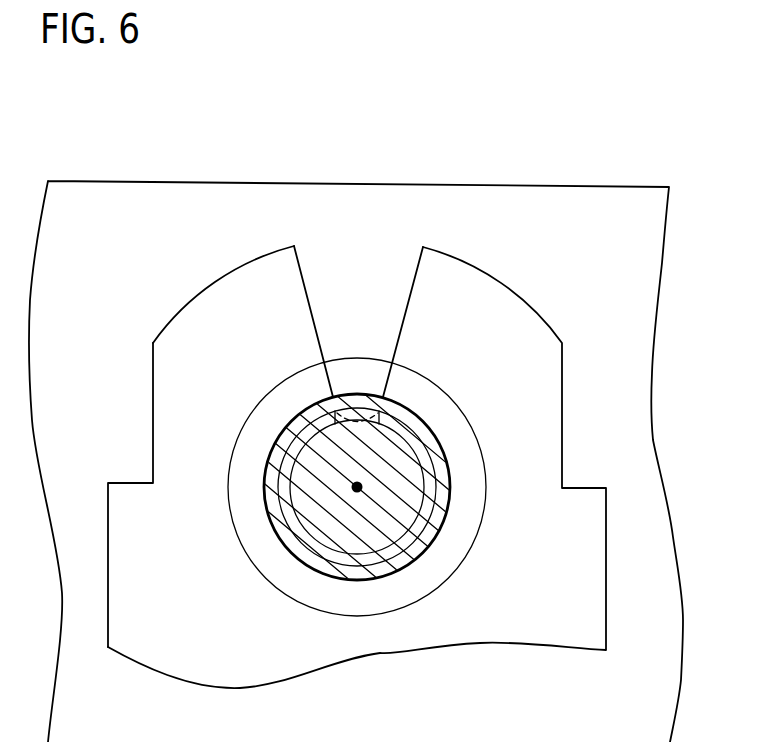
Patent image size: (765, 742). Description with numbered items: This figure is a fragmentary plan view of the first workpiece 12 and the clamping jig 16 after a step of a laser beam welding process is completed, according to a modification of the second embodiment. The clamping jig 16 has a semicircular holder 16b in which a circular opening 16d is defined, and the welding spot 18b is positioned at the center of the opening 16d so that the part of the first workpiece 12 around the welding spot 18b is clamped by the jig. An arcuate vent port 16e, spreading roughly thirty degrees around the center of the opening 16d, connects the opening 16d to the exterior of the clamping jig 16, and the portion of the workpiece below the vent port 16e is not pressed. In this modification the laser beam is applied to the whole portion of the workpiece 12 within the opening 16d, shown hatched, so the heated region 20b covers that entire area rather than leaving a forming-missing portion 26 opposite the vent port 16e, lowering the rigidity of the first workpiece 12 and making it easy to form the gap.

The first workpiece 12 is at (592, 194).
The clamping jig 16 is at (346, 467).
The holder 16b is at (166, 448).
The opening 16d is at (250, 420).
The vent port 16e is at (381, 256).
The welding spot 18b is at (360, 482).
The heated region 20b is at (293, 419).
The forming-missing portion 26 is at (368, 406).